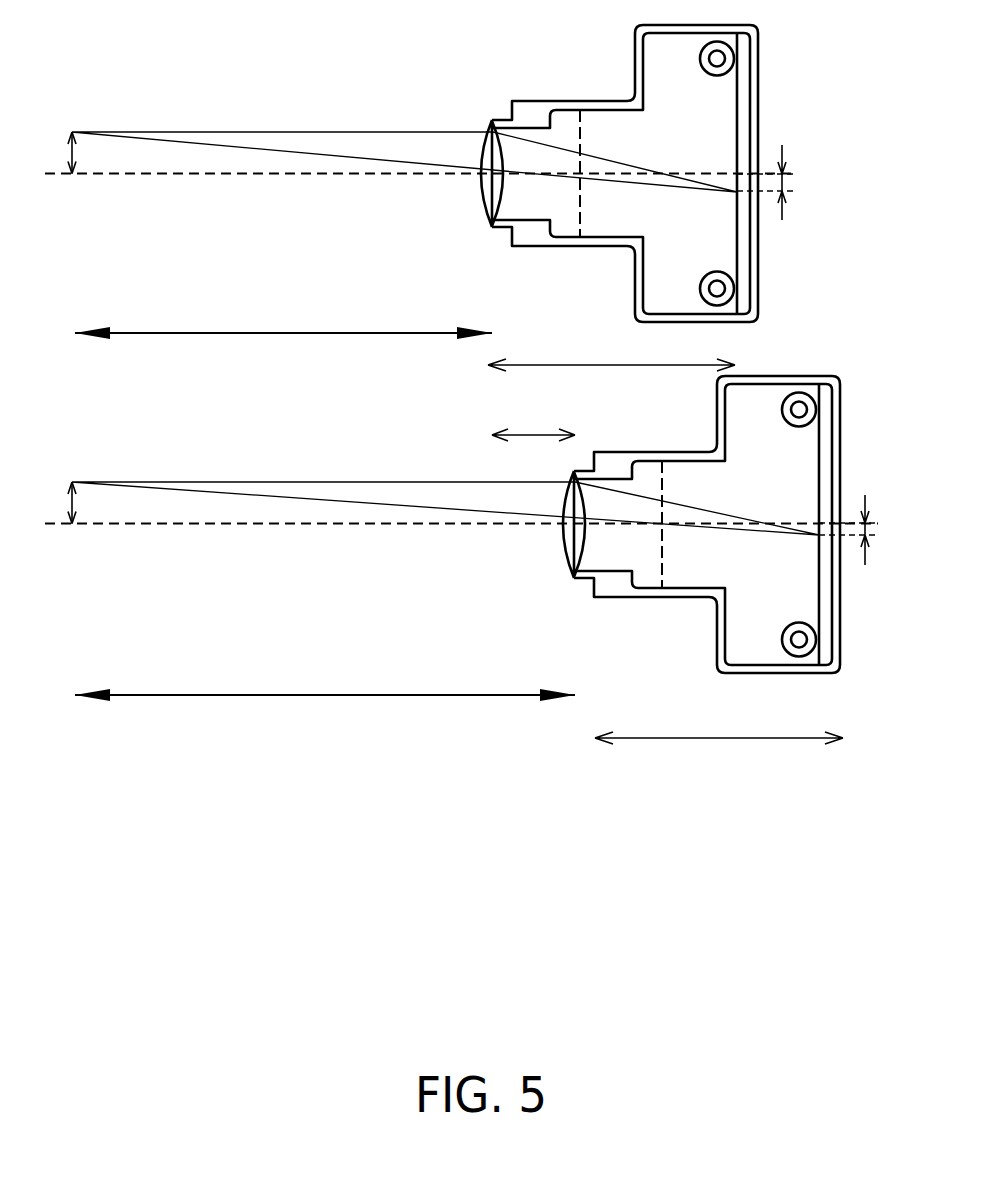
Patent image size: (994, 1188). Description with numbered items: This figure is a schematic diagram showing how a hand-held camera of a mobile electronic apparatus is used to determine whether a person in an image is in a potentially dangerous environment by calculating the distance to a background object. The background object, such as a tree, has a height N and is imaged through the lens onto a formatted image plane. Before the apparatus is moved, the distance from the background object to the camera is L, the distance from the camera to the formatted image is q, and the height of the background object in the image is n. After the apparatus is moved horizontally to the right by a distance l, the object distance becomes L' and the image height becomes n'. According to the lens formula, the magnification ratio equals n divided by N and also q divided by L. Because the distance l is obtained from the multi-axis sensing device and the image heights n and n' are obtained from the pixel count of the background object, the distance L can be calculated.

The height of the background object N is at (56, 328).
The distance from the background object to the camera L is at (283, 313).
The distance from the background object to the camera after movement L' is at (325, 675).
The distance from the camera to the formatted image q is at (665, 535).
The movement distance of the mobile electronic apparatus l is at (533, 420).
The height of the background object in the image n is at (794, 182).
The height of the background object in the image after movement n' is at (881, 530).